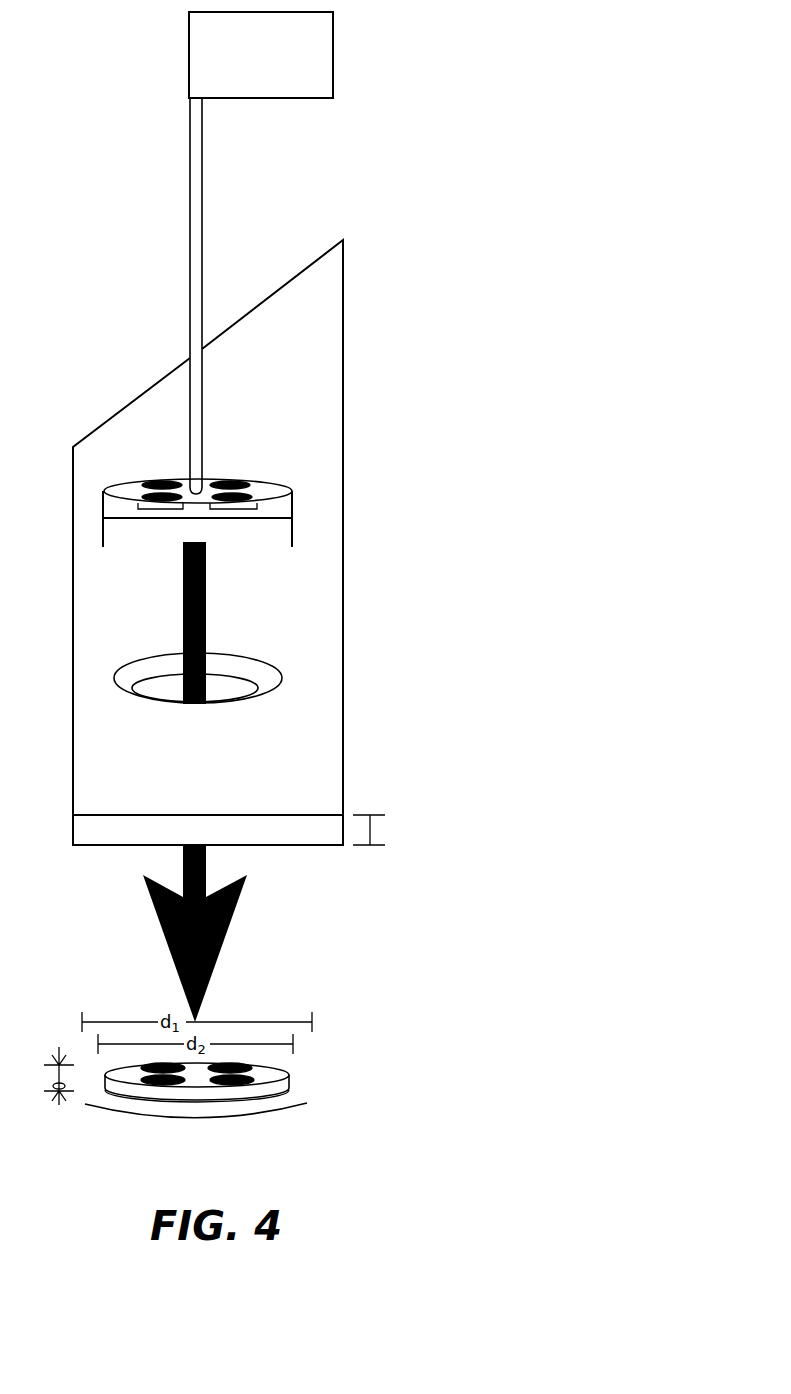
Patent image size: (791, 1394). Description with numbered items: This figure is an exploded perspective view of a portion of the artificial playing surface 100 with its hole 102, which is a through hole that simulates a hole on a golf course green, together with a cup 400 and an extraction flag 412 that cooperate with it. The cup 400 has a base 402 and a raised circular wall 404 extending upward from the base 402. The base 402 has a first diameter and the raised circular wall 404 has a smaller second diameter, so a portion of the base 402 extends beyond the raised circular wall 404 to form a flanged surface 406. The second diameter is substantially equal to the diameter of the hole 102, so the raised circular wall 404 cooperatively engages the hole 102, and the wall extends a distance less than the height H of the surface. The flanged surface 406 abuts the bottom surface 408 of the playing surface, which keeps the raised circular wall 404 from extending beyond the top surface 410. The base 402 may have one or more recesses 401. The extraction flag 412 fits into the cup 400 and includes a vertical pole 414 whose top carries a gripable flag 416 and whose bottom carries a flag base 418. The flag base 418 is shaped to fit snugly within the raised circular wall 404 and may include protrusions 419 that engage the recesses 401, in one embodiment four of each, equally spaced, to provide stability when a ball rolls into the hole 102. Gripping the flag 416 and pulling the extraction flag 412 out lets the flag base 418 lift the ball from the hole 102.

The flag 416 is at (283, 87).
The vertical pole 414 is at (202, 205).
The extraction flag 412 is at (166, 232).
The flag base 418 is at (253, 417).
The top surface 410 is at (343, 742).
The artificial playing surface 100 is at (336, 557).
The protrusions 419 is at (242, 510).
The hole 102 is at (283, 648).
The bottom surface 408 is at (318, 845).
The height H is at (378, 835).
The cup 400 is at (310, 1057).
The raised circular wall 404 is at (289, 1085).
The recesses 401 is at (160, 1086).
The base 402 is at (263, 1118).
The flanged surface 406 is at (195, 1115).